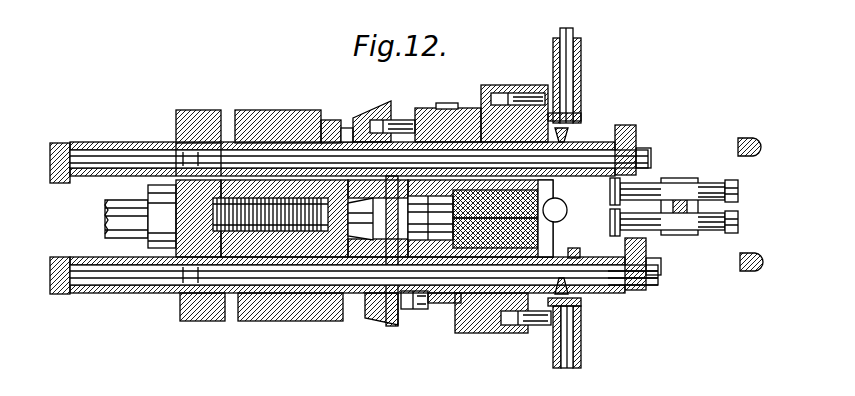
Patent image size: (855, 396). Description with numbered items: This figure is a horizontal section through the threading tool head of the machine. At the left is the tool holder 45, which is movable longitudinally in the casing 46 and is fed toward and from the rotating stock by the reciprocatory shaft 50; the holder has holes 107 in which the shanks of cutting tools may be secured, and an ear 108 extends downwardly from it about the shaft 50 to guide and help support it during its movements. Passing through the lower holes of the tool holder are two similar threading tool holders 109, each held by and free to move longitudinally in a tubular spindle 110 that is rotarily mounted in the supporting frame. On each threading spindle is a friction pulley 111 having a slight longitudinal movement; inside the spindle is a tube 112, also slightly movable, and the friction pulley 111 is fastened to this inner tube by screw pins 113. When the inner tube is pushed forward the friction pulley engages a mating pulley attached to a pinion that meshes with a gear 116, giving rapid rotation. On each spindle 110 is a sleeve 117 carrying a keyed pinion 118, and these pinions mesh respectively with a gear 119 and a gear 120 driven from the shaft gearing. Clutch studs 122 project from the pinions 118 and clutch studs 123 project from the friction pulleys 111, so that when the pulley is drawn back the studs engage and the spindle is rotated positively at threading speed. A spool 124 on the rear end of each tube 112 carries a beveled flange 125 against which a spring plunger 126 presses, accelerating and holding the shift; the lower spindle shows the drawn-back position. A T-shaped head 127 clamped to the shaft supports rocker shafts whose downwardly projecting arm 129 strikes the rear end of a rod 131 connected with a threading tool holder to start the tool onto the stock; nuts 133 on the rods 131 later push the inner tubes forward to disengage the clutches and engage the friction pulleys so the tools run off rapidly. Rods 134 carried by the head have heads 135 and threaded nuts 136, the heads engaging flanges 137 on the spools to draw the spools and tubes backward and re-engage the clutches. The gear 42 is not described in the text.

The gear 42 is at (280, 218).
The tool holder 45 is at (198, 126).
The casing 46 is at (288, 126).
The reciprocatory shaft 50 is at (126, 219).
The holes 107 is at (170, 302).
The ear 108 is at (161, 216).
The threading tool holders 109 is at (105, 284).
The tubular spindle 110 is at (280, 300).
The friction pulley 111 is at (378, 312).
The tube 112 is at (440, 296).
The screw pins 113 is at (365, 300).
The gear 116 is at (338, 124).
The sleeve 117 is at (465, 318).
The pinion 118 is at (440, 96).
The gear 119 is at (455, 189).
The gear 120 is at (455, 214).
The clutch studs 122 is at (416, 102).
The clutch studs 123 is at (380, 112).
The spool 124 is at (605, 292).
The beveled flange 125 is at (580, 286).
The spring plunger 126 is at (512, 318).
The T-shaped head 127 is at (700, 165).
The arm 129 is at (755, 258).
The rod 131 is at (655, 256).
The nuts 133 is at (655, 262).
The rods 134 is at (650, 228).
The heads 135 is at (603, 213).
The threaded nuts 136 is at (731, 210).
The flanges 137 is at (625, 288).